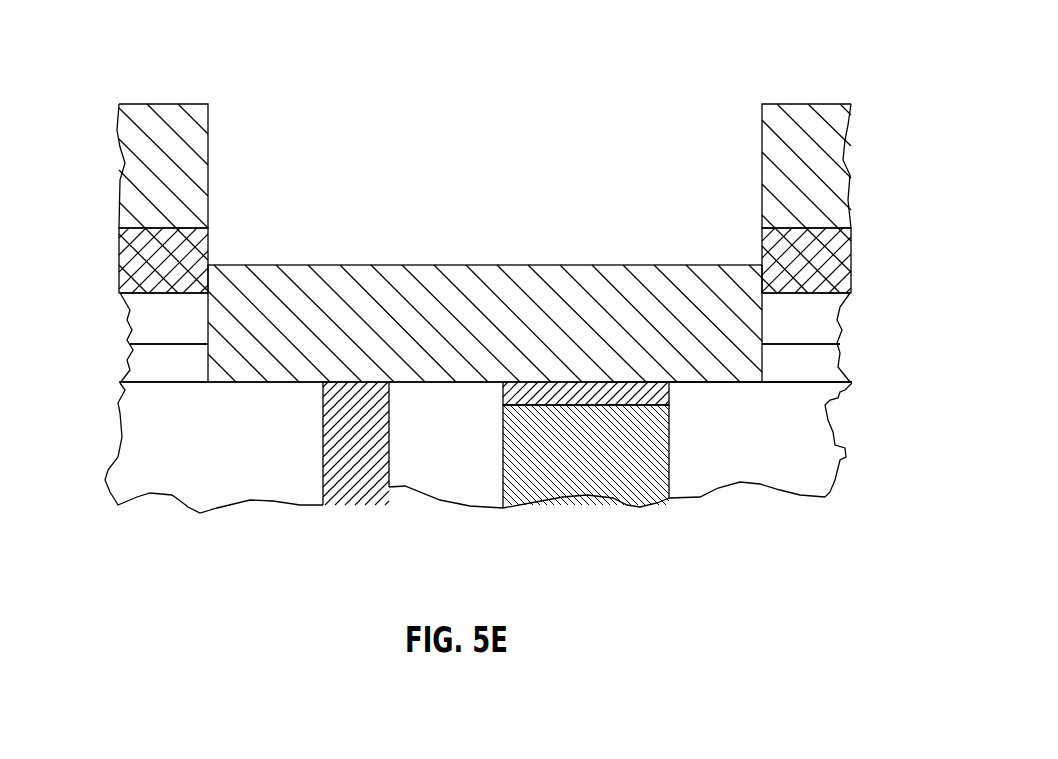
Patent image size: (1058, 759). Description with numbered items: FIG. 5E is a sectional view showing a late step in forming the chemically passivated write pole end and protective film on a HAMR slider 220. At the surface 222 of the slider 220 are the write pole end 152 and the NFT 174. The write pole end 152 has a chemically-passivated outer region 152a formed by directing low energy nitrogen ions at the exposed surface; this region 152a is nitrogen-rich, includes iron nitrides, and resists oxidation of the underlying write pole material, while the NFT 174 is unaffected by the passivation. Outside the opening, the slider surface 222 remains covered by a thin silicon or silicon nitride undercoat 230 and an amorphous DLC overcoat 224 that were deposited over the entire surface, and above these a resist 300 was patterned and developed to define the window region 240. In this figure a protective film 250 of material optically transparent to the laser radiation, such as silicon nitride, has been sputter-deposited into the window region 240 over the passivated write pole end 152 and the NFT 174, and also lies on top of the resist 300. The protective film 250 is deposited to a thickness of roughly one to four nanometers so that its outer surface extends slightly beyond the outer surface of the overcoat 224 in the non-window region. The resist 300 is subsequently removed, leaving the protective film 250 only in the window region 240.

The window region 240 is at (623, 62).
The protective film 250 is at (167, 107).
The resist 300 is at (119, 253).
The amorphous DLC overcoat 224 is at (128, 312).
The undercoat 230 is at (143, 368).
The surface 222 is at (852, 382).
The slider 220 is at (820, 487).
The NFT 174 is at (345, 487).
The write pole end 152 is at (635, 487).
The chemically-passivated outer region 152a is at (665, 391).